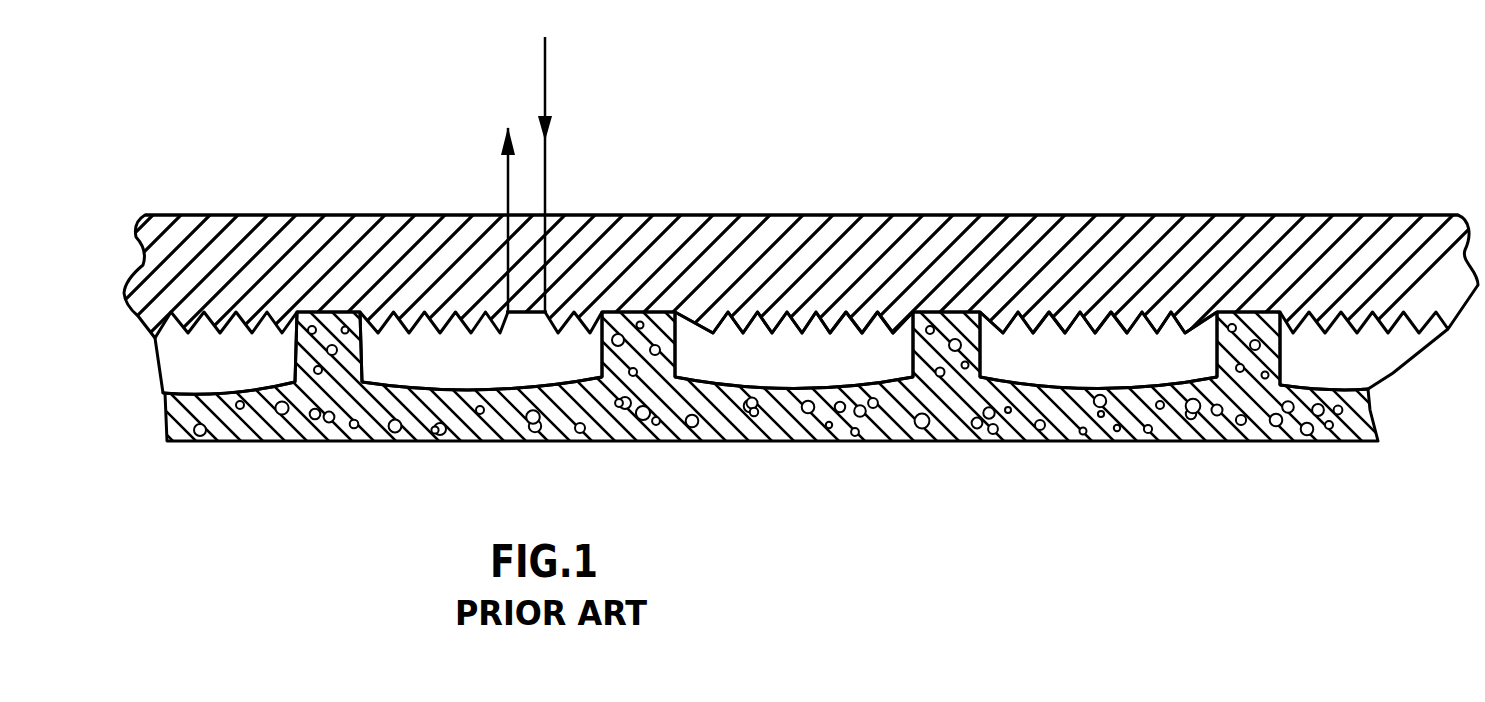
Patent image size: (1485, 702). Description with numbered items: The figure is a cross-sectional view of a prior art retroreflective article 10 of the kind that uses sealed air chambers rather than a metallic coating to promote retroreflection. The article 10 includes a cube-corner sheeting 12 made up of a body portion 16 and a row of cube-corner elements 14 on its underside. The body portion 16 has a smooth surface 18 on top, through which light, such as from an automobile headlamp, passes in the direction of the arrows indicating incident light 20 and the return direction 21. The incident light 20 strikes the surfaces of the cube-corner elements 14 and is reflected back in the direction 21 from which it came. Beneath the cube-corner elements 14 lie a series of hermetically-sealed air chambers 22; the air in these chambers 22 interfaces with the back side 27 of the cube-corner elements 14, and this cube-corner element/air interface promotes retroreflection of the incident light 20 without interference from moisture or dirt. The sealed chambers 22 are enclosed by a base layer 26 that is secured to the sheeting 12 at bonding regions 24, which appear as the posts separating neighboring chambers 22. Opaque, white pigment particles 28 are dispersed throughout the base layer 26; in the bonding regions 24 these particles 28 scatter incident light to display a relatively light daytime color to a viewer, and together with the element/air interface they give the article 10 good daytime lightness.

The retroreflective article 10 is at (752, 295).
The cube-corner sheeting 12 is at (752, 252).
The cube-corner elements 14 is at (853, 318).
The body portion 16 is at (1127, 228).
The smooth surface 18 is at (333, 213).
The incident light 20 is at (542, 98).
The reflected light direction 21 is at (505, 183).
The hermetically-sealed air chambers 22 is at (186, 377).
The bonding regions 24 is at (910, 352).
The base layer 26 is at (737, 406).
The back side of cube-corner elements 27 is at (538, 325).
The pigment particles 28 is at (758, 442).